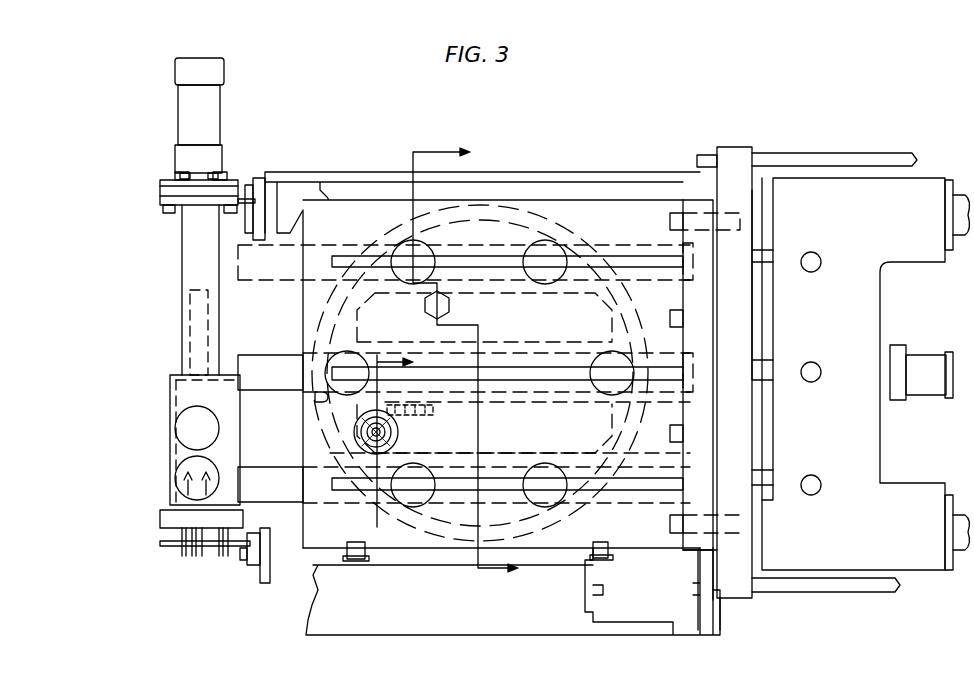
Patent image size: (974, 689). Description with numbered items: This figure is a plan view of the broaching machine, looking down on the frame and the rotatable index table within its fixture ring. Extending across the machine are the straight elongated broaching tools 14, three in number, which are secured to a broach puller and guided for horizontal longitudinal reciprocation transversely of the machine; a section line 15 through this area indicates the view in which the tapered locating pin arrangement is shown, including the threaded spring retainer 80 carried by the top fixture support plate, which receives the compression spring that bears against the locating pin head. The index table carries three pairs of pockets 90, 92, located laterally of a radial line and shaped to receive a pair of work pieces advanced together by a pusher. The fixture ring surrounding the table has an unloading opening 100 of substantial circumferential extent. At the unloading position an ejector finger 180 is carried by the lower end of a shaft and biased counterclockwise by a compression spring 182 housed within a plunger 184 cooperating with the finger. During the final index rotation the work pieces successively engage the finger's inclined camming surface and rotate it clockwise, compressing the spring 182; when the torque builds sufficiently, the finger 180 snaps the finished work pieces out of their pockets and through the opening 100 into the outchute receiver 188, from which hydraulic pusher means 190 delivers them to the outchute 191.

The broaching tools 14 is at (388, 437).
The section line 15- 15 is at (478, 363).
The threaded spring retainer 80 is at (450, 305).
The pocket 90 is at (432, 550).
The pocket 92 is at (540, 525).
The unloading opening 100 is at (315, 396).
The ejector finger 180 is at (318, 390).
The compression spring 182 is at (428, 400).
The plunger 184 is at (398, 432).
The outchute receiver 188 is at (170, 452).
The hydraulic pusher means 190 is at (222, 304).
The outchute 191 is at (185, 552).